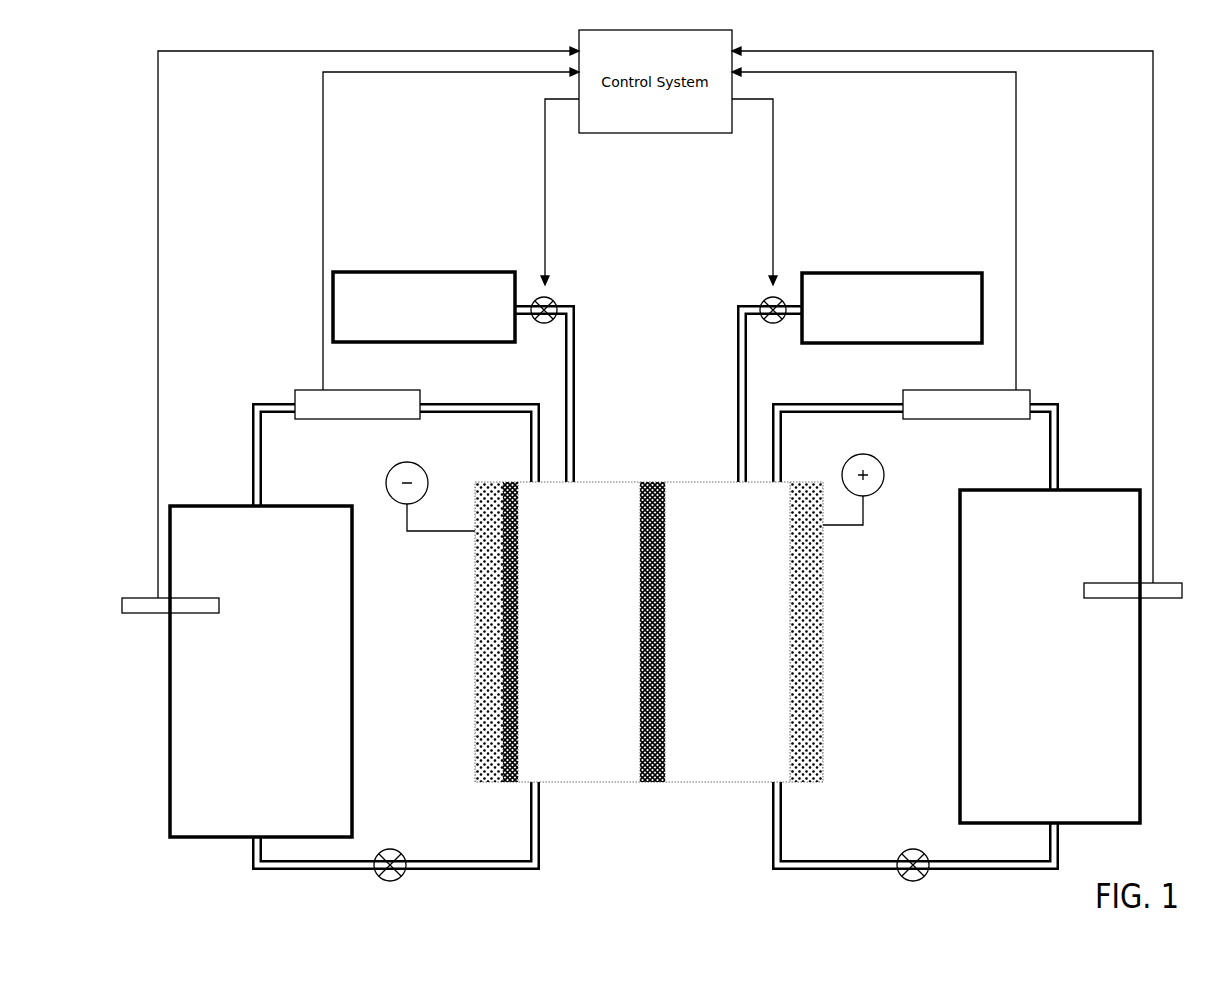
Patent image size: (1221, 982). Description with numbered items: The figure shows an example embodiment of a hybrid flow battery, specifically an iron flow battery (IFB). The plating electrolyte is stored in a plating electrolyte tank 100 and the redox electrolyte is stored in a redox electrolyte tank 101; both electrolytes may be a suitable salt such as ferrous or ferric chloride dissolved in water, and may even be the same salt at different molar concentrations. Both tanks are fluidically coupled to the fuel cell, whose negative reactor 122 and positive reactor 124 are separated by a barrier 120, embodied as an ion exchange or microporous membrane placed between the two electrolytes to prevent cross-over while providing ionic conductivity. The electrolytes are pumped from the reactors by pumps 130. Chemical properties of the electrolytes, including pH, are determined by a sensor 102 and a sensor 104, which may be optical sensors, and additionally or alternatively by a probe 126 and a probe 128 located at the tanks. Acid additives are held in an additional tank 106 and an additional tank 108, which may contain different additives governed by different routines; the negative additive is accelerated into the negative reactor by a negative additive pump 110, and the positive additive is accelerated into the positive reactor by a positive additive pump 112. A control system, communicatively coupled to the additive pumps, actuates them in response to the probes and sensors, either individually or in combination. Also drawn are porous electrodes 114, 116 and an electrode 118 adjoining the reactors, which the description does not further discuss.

The plating electrolyte tank 100 is at (239, 642).
The redox electrolyte tank 101 is at (1043, 642).
The sensor 102 is at (343, 413).
The sensor 104 is at (946, 413).
The additional tank 106 is at (389, 317).
The additional tank 108 is at (870, 317).
The negative additive pump 110 is at (543, 324).
The positive additive pump 112 is at (775, 324).
The negative porous electrode 114 is at (475, 676).
The positive porous electrode 116 is at (823, 668).
The negative electrode plate 118 is at (511, 786).
The barrier 120 is at (652, 787).
The negative reactor 122 is at (565, 601).
The positive reactor 124 is at (724, 601).
The probe 126 is at (1165, 583).
The probe 128 is at (142, 598).
The pumps 130 is at (395, 849).